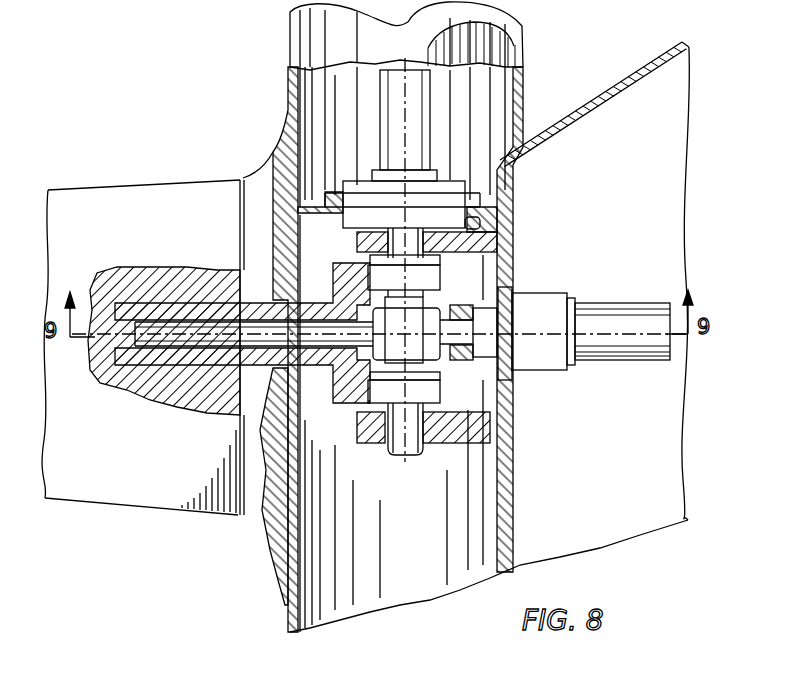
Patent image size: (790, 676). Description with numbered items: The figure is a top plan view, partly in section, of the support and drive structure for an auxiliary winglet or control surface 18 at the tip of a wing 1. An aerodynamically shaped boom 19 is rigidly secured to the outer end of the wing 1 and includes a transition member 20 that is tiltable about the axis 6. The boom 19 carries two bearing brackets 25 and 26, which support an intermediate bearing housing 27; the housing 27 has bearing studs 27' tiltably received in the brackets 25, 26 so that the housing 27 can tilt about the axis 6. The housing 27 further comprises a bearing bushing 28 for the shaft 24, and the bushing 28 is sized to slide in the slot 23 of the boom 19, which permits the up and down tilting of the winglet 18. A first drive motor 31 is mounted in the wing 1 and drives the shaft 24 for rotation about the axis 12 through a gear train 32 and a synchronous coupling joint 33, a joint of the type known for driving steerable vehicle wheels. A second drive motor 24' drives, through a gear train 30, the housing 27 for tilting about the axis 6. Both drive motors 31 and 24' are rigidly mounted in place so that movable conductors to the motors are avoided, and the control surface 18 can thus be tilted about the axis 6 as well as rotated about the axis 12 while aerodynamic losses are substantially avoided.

The wing 1 is at (641, 157).
The axis 6 is at (403, 486).
The axis 12 is at (553, 338).
The auxiliary control surface 18 is at (96, 191).
The boom 19 is at (516, 42).
The transition member 20 is at (263, 163).
The slot 23 is at (342, 382).
The shaft 24 is at (237, 375).
The drive motor 24' is at (427, 120).
The bearing bracket 25 is at (357, 243).
The bearing bracket 26 is at (361, 441).
The intermediate bearing housing 27 is at (391, 349).
The bearing studs 27' is at (425, 361).
The bearing bushing 28 is at (318, 303).
The gear train 30 is at (356, 181).
The first drive motor 31 is at (620, 308).
The gear train 32 is at (540, 302).
The synchronous coupling joint 33 is at (418, 341).